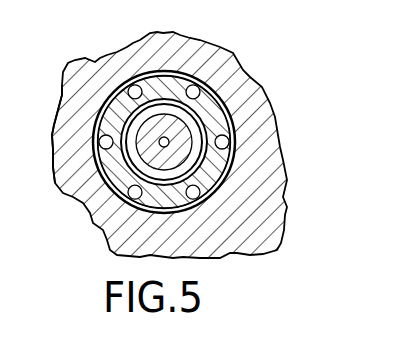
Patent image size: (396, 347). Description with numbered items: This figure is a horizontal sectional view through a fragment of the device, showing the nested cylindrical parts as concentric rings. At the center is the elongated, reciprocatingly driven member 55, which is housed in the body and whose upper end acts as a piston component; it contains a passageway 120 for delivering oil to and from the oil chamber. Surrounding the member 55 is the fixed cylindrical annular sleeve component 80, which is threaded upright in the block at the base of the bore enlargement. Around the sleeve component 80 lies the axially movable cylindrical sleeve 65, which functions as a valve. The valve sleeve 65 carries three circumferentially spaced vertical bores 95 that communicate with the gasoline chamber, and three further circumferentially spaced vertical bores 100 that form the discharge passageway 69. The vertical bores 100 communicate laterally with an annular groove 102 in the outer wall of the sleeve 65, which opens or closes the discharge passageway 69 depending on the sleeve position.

The vertical bores 100 is at (184, 145).
The cylindrical annular sleeve component 80 is at (69, 150).
The cylindrical sleeve 65 is at (181, 142).
The reciprocatingly driven member 55 is at (179, 142).
The annular groove 102 is at (190, 157).
The vertical bores 95 is at (138, 147).
The discharge passageway 69 is at (265, 141).
The passageway 120 is at (164, 142).